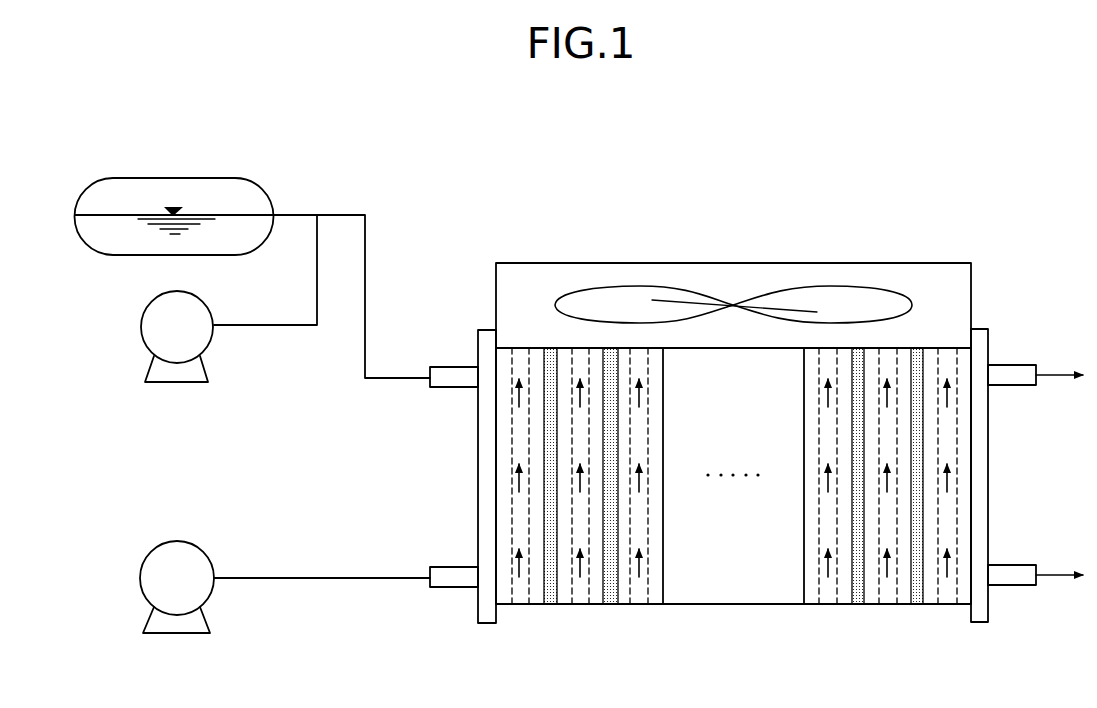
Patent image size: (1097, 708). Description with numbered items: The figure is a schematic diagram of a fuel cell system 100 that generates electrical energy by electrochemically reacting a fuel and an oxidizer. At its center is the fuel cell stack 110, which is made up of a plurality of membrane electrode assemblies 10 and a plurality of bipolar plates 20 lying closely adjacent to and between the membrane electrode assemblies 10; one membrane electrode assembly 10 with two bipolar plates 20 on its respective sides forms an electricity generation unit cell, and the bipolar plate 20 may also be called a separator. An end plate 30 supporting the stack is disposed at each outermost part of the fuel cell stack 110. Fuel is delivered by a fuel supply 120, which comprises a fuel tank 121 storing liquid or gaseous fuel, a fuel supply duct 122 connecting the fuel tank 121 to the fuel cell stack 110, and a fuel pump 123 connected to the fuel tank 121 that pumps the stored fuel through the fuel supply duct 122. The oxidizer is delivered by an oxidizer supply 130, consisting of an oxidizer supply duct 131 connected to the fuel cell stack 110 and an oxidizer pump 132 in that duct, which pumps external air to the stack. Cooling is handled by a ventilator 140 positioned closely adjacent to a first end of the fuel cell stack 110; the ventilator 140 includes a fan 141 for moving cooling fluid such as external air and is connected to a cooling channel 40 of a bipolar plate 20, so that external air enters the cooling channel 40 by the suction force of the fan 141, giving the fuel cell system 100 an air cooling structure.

The fuel cell system 100 is at (513, 160).
The fuel cell stack 110 is at (733, 470).
The membrane electrode assembly 10 is at (549, 597).
The bipolar plate 20 is at (597, 597).
The end plate 30 is at (486, 468).
The cooling channel 40 is at (882, 592).
The fuel supply 120 is at (229, 240).
The fuel tank 121 is at (93, 183).
The fuel supply duct 122 is at (345, 215).
The fuel pump 123 is at (150, 305).
The oxidizer supply 130 is at (251, 559).
The oxidizer supply duct 131 is at (318, 580).
The oxidizer pump 132 is at (148, 557).
The ventilator 140 is at (733, 260).
The fan 141 is at (609, 296).